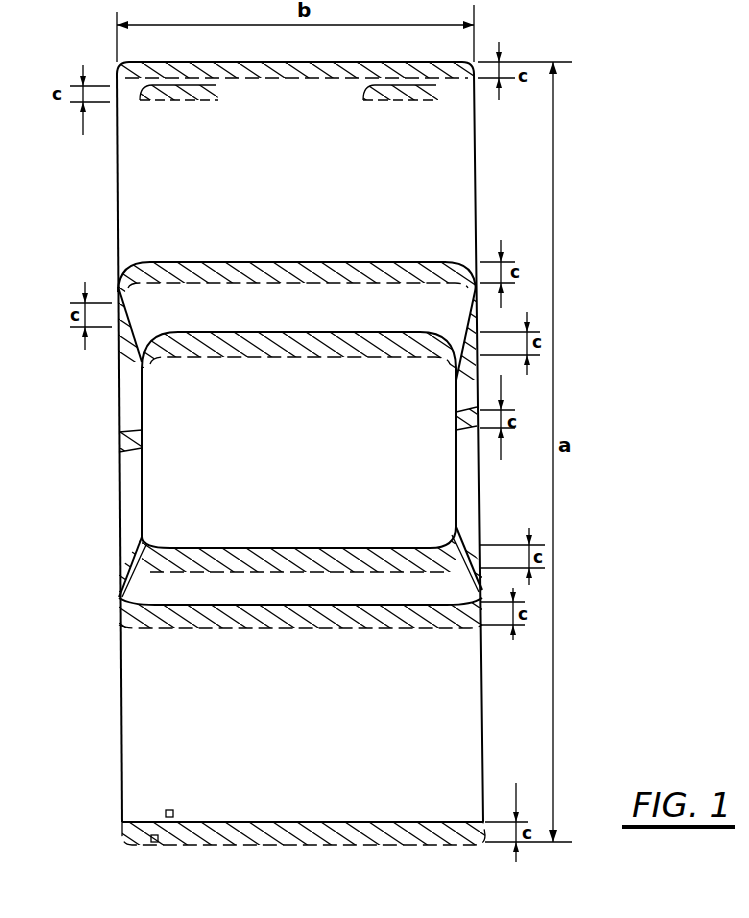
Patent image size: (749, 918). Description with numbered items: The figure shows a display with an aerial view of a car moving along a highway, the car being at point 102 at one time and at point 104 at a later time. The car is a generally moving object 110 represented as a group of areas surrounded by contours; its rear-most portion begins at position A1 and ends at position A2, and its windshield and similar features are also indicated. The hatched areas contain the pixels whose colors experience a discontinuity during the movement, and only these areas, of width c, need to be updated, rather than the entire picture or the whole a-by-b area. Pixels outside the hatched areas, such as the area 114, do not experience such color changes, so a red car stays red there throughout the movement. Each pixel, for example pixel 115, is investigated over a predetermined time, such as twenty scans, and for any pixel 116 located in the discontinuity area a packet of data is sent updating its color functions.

The point 102 is at (150, 628).
The point 104 is at (121, 600).
The object 110 is at (155, 478).
The area 114 is at (153, 695).
The pixel 115 is at (165, 812).
The pixel 116 is at (153, 846).
The position A1 is at (360, 848).
The position A2 is at (400, 825).